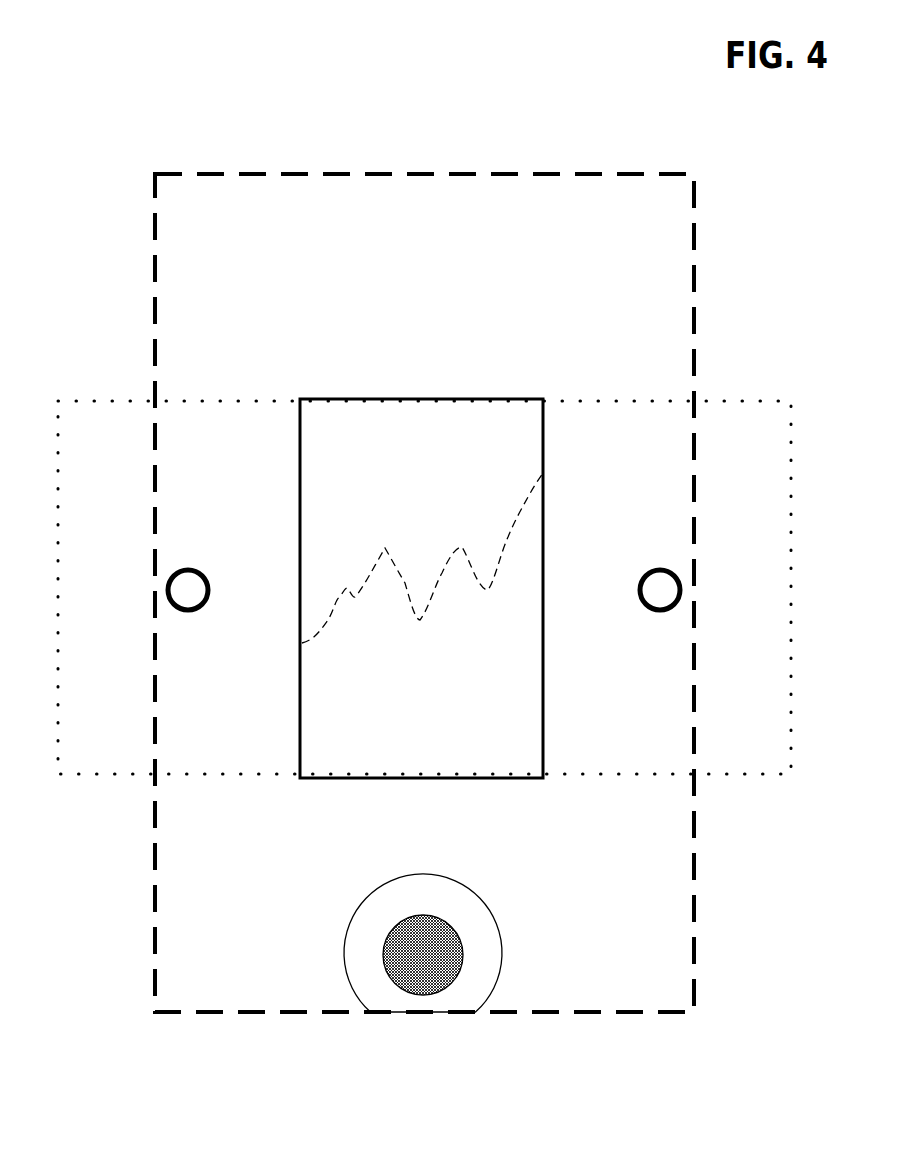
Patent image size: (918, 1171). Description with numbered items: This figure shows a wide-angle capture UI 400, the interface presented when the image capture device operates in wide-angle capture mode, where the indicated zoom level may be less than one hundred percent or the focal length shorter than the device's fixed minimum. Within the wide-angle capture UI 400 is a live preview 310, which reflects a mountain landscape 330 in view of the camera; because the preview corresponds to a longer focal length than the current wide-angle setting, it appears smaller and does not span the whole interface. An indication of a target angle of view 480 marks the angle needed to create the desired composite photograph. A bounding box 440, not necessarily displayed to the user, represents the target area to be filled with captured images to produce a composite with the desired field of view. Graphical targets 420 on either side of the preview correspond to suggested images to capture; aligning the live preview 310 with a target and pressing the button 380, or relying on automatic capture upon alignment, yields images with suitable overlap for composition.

The wide-angle capture UI 400 is at (90, 1141).
The bounding box 440 is at (792, 777).
The live preview 310 is at (545, 732).
The mountain landscape 330 is at (522, 503).
The indication of a target angle of view 480 is at (422, 577).
The graphical targets 420 is at (200, 567).
The button 380 is at (350, 920).